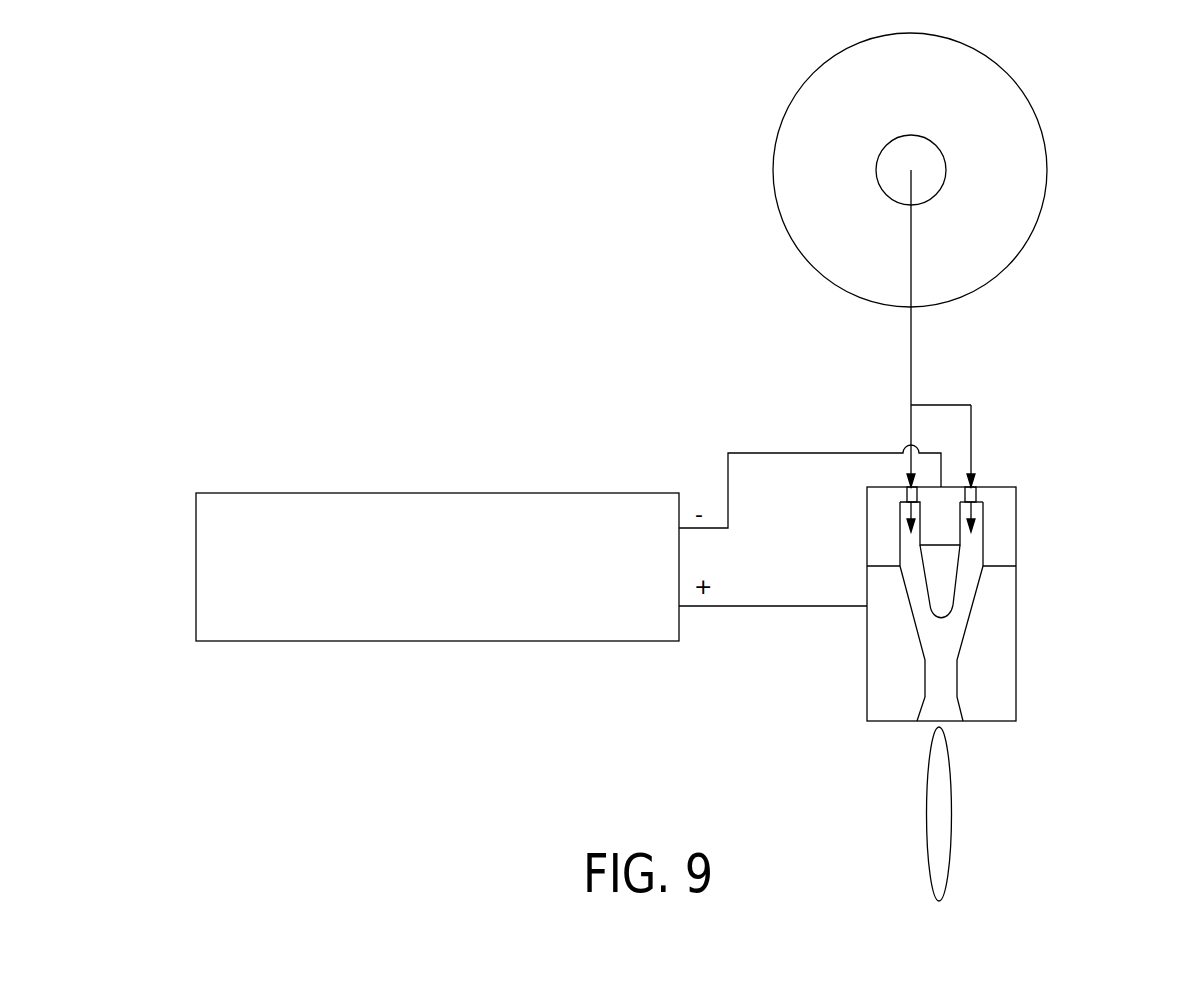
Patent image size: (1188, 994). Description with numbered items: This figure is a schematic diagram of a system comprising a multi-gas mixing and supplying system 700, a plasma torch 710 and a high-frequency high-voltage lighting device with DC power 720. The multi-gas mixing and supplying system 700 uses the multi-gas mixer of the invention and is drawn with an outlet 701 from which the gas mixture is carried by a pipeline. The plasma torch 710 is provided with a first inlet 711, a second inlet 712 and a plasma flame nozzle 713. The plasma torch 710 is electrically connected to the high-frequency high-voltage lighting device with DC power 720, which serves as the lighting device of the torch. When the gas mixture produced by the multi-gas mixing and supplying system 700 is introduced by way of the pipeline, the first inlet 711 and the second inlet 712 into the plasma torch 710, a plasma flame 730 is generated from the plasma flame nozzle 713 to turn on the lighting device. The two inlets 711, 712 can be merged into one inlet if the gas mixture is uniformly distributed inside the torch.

The multi-gas mixing and supplying system 700 is at (1047, 172).
The gas outlet 701 is at (937, 137).
The plasma torch 710 is at (1016, 630).
The first inlet 711 is at (907, 486).
The second inlet 712 is at (976, 486).
The plasma flame nozzle 713 is at (954, 713).
The high-frequency high-voltage lighting device with DC power 720 is at (196, 566).
The plasma flame 730 is at (951, 845).